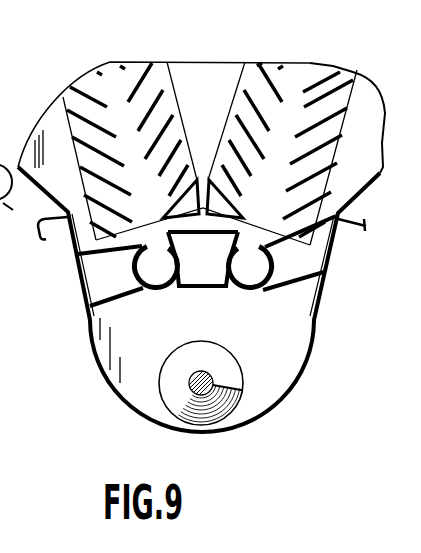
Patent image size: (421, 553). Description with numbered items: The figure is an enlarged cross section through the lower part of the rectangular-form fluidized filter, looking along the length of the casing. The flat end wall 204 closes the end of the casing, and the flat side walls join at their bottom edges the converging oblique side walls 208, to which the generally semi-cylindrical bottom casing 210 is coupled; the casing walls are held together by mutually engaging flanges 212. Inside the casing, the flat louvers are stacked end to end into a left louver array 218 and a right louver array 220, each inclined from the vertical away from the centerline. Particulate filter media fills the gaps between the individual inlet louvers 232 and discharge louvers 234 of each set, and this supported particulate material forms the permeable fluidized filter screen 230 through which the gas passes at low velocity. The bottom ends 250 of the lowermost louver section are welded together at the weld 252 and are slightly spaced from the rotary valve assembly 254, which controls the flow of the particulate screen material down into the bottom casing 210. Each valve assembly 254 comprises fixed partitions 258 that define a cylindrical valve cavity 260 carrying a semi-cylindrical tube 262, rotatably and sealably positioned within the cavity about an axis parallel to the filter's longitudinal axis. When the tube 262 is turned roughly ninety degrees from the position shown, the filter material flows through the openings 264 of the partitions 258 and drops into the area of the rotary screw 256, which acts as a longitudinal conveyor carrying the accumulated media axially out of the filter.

The end wall 204 is at (9, 129).
The converging oblique side wall 208 is at (43, 224).
The semi-cylindrical bottom casing 210 is at (275, 408).
The mutually engaging flanges 212 is at (358, 212).
The left stacked louver set or array 218 is at (171, 74).
The right stacked louver set or array 220 is at (235, 83).
The fluidized filter screen 230 is at (110, 58).
The inlet louver 232 is at (70, 122).
The discharge louver 234 is at (172, 130).
The bottom ends of the lowermost louver section 250 is at (110, 225).
The weld 252 is at (203, 259).
The rotary valve assembly 254 is at (108, 275).
The rotary screw 256 is at (158, 364).
The fixed partition 258 is at (80, 270).
The cylindrical valve cavity 260 is at (157, 280).
The semi-cylindrical tube 262 is at (230, 288).
The opening of the partition member 264 is at (152, 243).